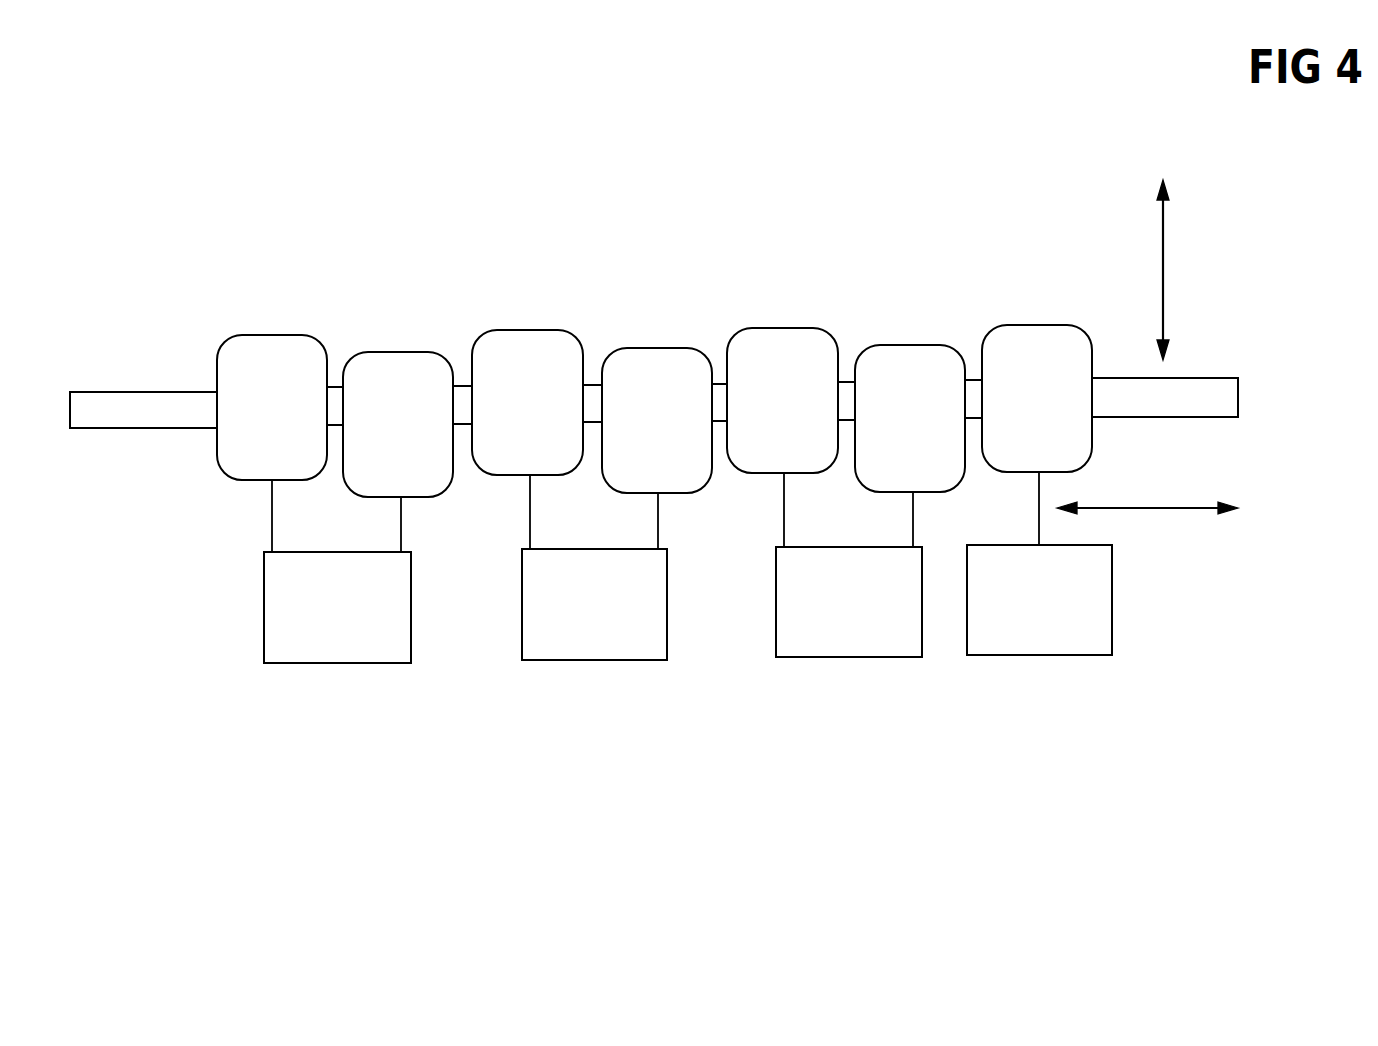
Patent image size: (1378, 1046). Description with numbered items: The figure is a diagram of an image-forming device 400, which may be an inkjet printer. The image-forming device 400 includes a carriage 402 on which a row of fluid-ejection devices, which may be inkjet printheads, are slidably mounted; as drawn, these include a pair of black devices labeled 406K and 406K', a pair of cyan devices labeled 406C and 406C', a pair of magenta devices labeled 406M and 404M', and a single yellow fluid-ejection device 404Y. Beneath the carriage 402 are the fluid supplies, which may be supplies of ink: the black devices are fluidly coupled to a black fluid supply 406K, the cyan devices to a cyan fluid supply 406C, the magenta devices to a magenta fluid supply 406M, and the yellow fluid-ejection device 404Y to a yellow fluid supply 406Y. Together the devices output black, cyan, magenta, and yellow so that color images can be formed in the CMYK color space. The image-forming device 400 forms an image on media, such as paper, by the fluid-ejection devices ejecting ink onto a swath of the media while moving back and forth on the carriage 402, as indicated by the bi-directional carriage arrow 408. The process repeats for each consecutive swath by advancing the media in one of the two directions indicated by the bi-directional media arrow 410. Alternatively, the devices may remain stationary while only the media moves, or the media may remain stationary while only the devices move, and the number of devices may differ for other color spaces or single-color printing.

The image-forming device 400 is at (438, 770).
The carriage 402 is at (142, 392).
The fluid supply 406K is at (314, 498).
The second black printhead 406K' is at (398, 421).
The fluid supply 406C is at (569, 495).
The second cyan printhead 406C' is at (657, 418).
The fluid supply 406M is at (777, 328).
The fluid-ejection device 404M' is at (910, 416).
The fluid-ejection device 404Y is at (1037, 325).
The fluid supply 406Y is at (1047, 655).
The bi-directional arrow 408 is at (1142, 508).
The bi-directional arrow 410 is at (1163, 240).